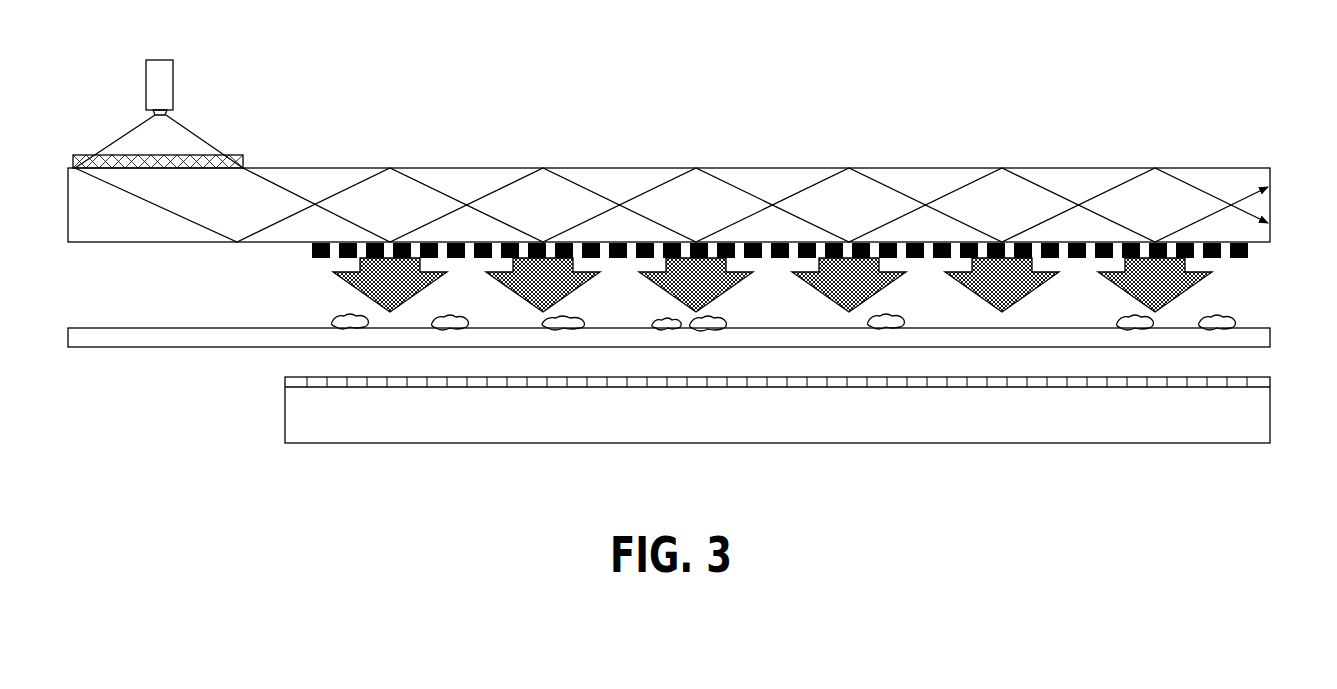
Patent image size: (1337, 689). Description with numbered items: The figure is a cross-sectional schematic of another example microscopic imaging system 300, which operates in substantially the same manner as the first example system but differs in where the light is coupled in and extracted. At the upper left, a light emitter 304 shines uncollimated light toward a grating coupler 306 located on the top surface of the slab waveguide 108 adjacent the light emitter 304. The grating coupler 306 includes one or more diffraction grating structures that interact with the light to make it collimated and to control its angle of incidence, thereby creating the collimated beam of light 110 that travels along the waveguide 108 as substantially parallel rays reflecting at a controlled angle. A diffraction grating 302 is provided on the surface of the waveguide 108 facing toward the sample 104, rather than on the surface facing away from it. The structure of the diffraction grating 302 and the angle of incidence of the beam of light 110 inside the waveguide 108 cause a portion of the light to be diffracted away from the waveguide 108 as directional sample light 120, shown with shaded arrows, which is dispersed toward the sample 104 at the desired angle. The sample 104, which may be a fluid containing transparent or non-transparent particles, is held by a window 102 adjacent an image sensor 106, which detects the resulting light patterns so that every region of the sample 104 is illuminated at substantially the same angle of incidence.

The microscopic imaging system 300 is at (982, 94).
The light emitter 304 is at (163, 73).
The grating coupler 306 is at (242, 156).
The slab waveguide 108 is at (768, 178).
The beam of collimated light 110 is at (438, 191).
The diffraction grating 302 is at (1218, 258).
The sample light 120 is at (657, 282).
The sample 104 is at (321, 318).
The window 102 is at (180, 338).
The image sensor 106 is at (293, 405).